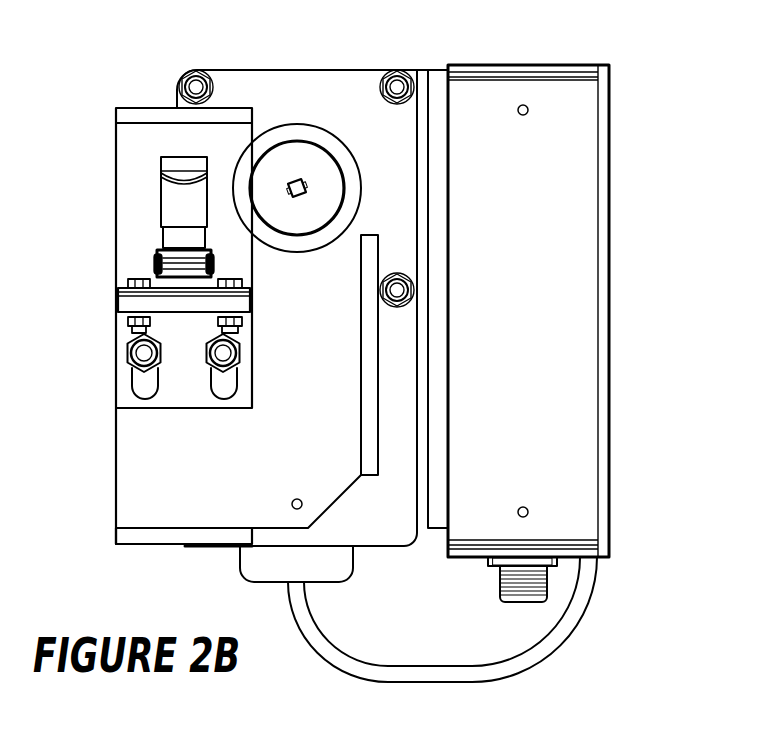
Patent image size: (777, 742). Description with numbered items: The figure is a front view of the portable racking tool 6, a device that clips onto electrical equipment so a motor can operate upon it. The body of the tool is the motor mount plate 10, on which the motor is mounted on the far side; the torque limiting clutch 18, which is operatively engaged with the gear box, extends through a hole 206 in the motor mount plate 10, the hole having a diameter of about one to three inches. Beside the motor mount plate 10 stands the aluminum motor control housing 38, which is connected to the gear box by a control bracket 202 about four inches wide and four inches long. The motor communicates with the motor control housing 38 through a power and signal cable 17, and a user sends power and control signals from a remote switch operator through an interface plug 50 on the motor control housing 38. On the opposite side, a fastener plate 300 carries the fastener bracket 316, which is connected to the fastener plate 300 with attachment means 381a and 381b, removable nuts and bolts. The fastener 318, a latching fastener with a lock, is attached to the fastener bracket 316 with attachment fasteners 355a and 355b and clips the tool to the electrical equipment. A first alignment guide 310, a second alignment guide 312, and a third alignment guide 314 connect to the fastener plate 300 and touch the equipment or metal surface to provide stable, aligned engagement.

The portable racking tool 6 is at (683, 588).
The motor mount plate 10 is at (357, 92).
The power and signal cable 17 is at (580, 608).
The torque limiting clutch 18 is at (330, 150).
The motor control housing 38 is at (610, 310).
The interface plug 50 is at (500, 583).
The control bracket 202 is at (446, 68).
The hole 206 is at (315, 133).
The fastener plate 300 is at (147, 329).
The first alignment guide 310 is at (116, 117).
The second alignment guide 312 is at (116, 537).
The third alignment guide 314 is at (361, 410).
The fastener bracket 316 is at (118, 308).
The fastener 318 is at (171, 203).
The attachment fastener 355a is at (127, 323).
The attachment fastener 355b is at (243, 325).
The attachment means 381a is at (127, 351).
The attachment means 381b is at (243, 348).